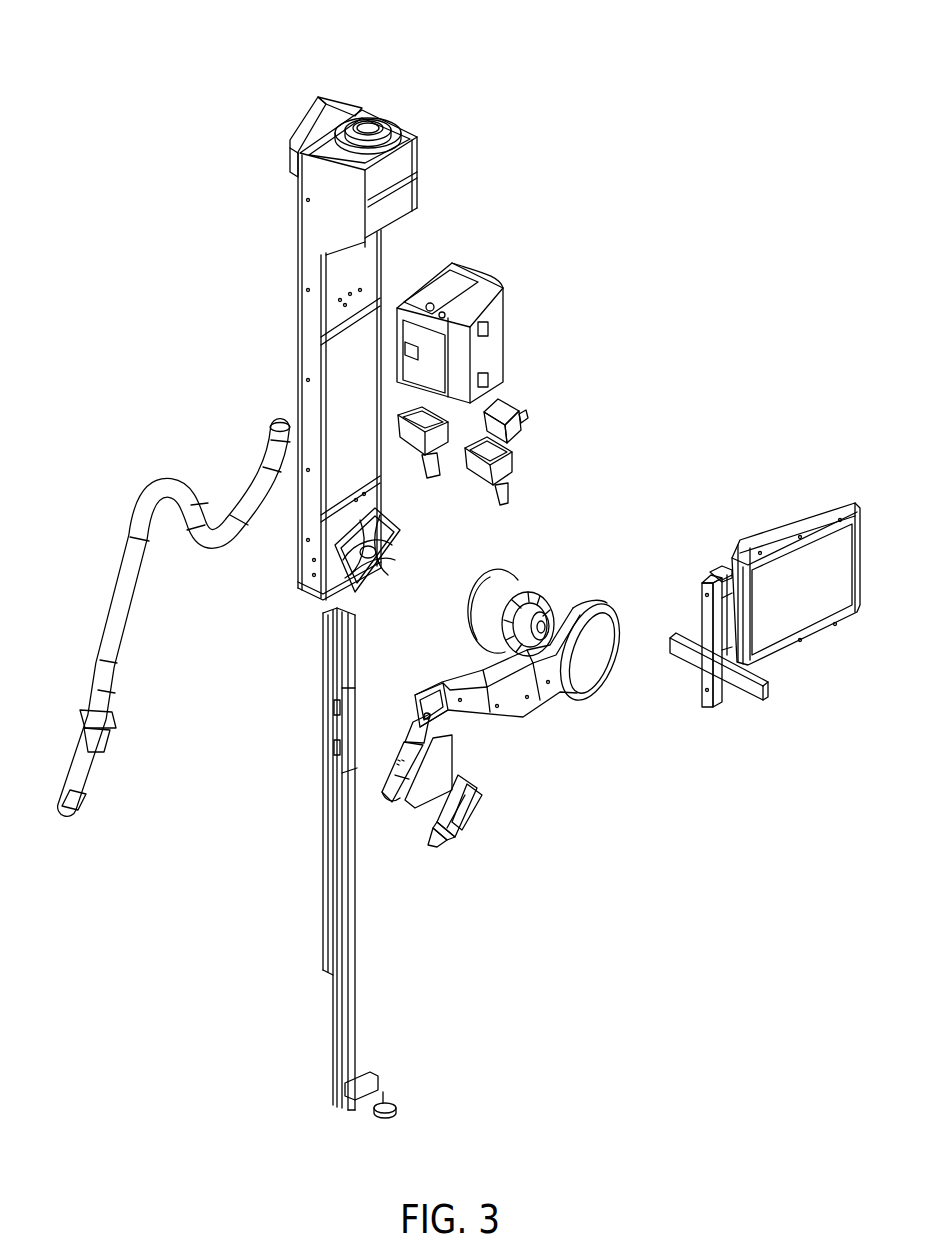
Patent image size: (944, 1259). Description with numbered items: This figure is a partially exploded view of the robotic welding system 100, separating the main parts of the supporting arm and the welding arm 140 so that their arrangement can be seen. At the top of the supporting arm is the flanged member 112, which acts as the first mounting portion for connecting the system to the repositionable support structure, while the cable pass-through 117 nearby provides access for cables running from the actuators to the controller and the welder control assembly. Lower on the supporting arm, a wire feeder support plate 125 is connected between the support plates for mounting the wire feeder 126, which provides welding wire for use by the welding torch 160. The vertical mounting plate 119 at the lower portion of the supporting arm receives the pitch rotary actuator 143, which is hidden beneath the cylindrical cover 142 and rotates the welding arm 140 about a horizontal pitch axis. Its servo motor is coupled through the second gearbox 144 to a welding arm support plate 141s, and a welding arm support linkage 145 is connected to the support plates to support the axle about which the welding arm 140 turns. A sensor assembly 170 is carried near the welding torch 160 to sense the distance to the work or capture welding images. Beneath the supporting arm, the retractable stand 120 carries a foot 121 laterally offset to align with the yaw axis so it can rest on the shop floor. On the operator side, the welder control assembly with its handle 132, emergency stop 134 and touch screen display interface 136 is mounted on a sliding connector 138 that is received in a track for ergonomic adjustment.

The robotic welding system 100 is at (215, 88).
The cable pass-through 117 is at (338, 100).
The flanged member 112 is at (383, 113).
The wire feeder support plate 125 is at (352, 270).
The wire feeder 126 is at (470, 313).
The emergency stop 134 is at (527, 402).
The handle 132 is at (432, 472).
The pitch rotary actuator 143 is at (526, 598).
The second gearbox 144 is at (548, 614).
The welding arm support linkage 145 is at (388, 528).
The vertical mounting plate 119 is at (363, 565).
The cylindrical cover 142 is at (472, 620).
The welding arm support plate 141s is at (458, 683).
The welding arm 140 is at (538, 722).
The sensor assembly 170 is at (478, 805).
The welding torch 160 is at (110, 730).
The retractable stand 120 is at (328, 950).
The foot 121 is at (395, 1105).
The touch screen display interface 136 is at (795, 515).
The sliding connector 138 is at (700, 612).